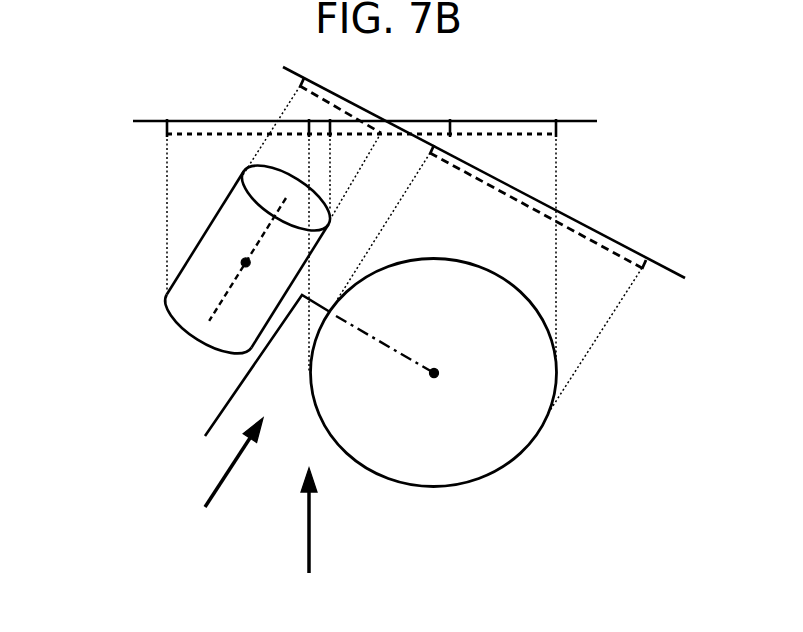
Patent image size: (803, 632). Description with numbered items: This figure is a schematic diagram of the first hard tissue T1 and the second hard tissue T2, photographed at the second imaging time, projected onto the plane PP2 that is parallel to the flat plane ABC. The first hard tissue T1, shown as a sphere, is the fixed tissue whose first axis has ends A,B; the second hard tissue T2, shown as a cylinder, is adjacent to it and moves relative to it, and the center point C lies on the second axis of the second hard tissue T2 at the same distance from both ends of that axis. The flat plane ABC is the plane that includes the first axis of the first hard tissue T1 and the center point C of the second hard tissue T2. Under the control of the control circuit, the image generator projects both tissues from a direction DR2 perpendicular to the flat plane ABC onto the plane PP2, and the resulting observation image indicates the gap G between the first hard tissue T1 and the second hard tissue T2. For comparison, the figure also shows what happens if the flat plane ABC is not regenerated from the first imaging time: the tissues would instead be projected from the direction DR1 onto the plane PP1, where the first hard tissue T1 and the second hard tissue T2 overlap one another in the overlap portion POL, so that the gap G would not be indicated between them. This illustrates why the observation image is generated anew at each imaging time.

The plane parallel to the flat plane ABC at first imaging time PP1 is at (580, 121).
The plane parallel to the flat plane ABC at second imaging time PP2 is at (663, 270).
The overlap portion POL is at (318, 121).
The gap G is at (403, 113).
The second hard tissue T2 is at (177, 282).
The center point C is at (270, 277).
The first hard tissue T1 is at (557, 373).
The ends of the first axis A,B is at (437, 365).
The flat plane ABC is at (251, 377).
The direction perpendicular to the flat plane ABC at first imaging time DR1 is at (309, 541).
The direction perpendicular to the flat plane ABC at second imaging time DR2 is at (219, 481).